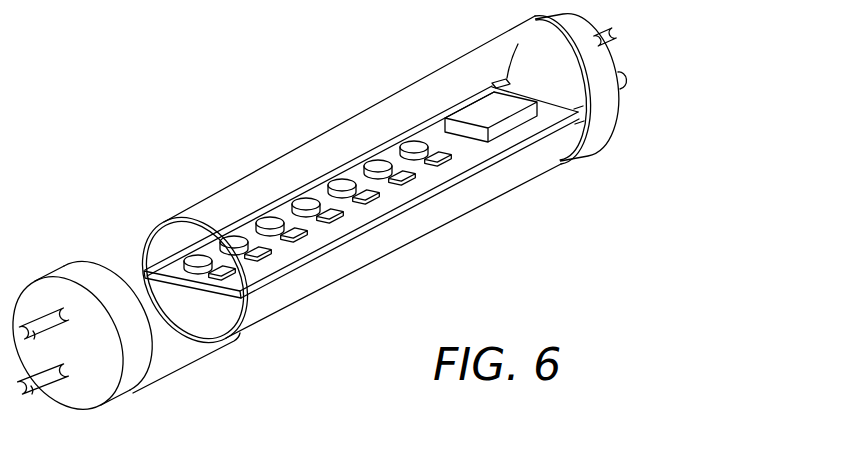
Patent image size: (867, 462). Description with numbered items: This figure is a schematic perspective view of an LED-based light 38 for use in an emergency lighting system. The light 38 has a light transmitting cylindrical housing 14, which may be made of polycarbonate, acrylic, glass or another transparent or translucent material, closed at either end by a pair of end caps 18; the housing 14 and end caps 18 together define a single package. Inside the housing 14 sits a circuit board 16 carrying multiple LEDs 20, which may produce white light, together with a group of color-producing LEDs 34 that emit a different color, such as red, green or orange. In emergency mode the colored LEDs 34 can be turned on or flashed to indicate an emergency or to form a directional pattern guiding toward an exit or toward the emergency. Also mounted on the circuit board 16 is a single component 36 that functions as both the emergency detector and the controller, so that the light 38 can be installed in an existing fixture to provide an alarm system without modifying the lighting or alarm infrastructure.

The housing 14 is at (292, 302).
The circuit board 16 is at (468, 160).
The end caps 18 is at (72, 268).
The LEDs 20 is at (400, 183).
The color-producing LEDs 34 is at (344, 185).
The single component 36 is at (500, 112).
The light 38 is at (203, 168).